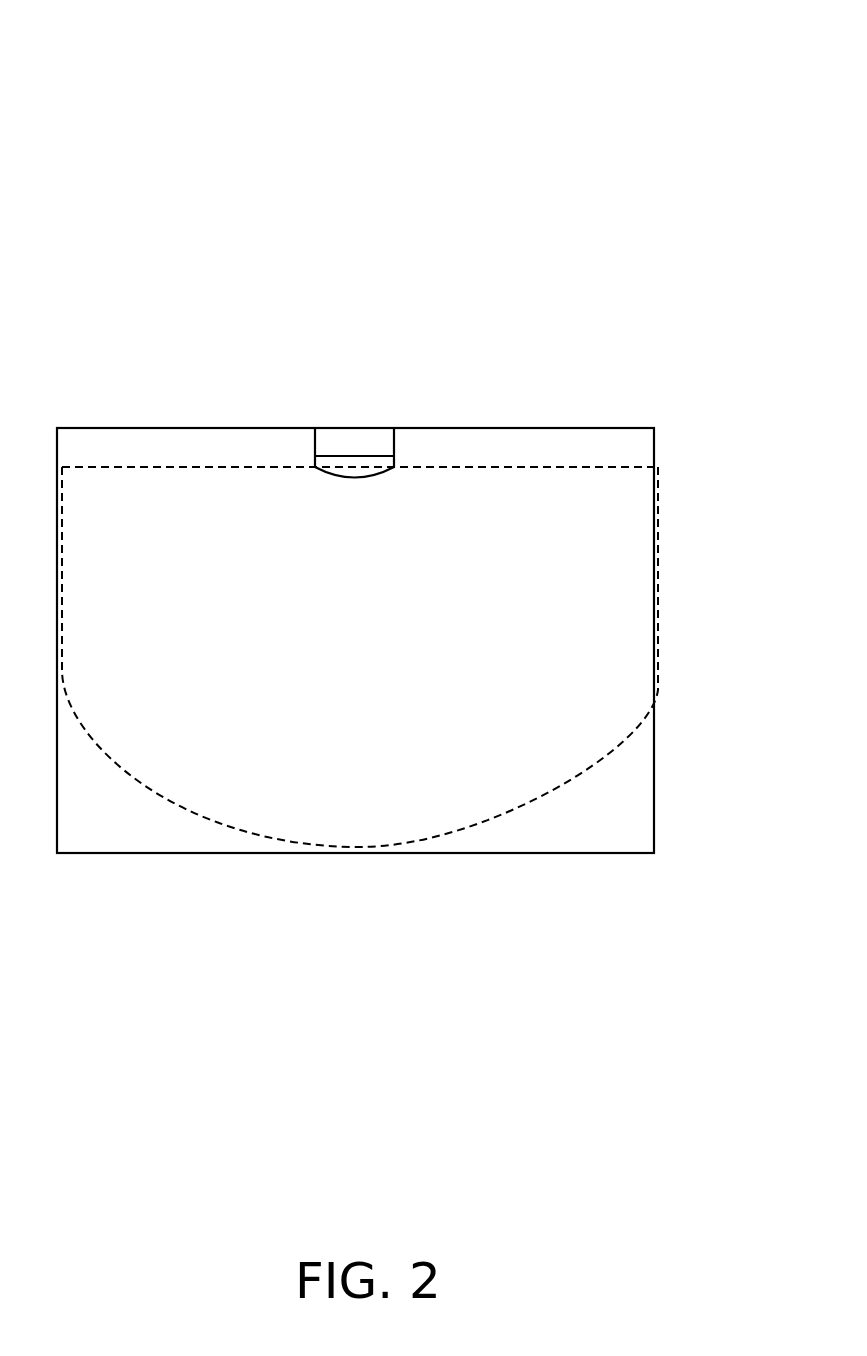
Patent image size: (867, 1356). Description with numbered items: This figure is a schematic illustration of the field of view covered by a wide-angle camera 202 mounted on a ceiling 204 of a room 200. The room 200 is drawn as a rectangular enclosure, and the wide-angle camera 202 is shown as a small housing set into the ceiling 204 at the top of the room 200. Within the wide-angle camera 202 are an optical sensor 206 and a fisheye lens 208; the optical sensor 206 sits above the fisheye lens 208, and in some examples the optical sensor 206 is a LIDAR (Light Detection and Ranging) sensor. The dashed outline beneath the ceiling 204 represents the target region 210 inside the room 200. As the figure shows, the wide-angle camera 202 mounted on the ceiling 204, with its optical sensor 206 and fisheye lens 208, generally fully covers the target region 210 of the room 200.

The room 200 is at (678, 57).
The wide-angle camera 202 is at (310, 440).
The ceiling 204 is at (367, 586).
The optical sensor 206 is at (365, 411).
The fisheye lens 208 is at (414, 410).
The target region 210 is at (401, 657).